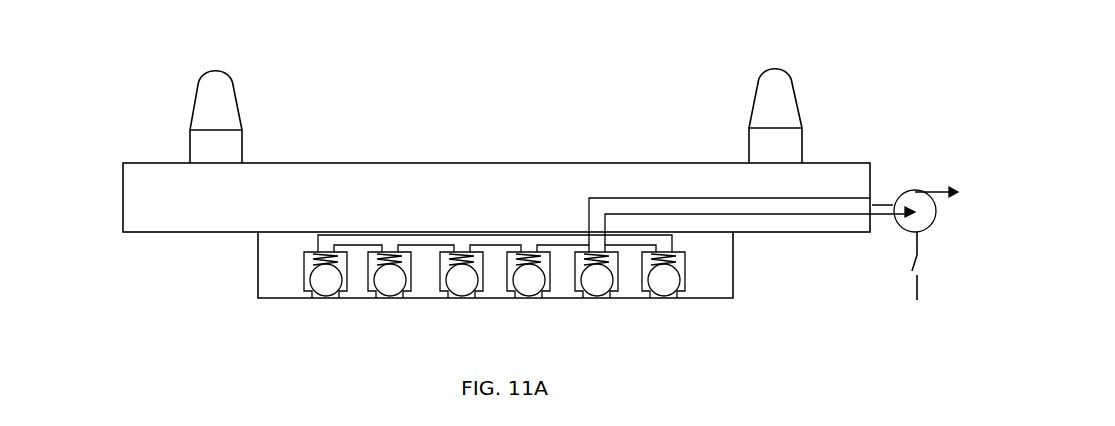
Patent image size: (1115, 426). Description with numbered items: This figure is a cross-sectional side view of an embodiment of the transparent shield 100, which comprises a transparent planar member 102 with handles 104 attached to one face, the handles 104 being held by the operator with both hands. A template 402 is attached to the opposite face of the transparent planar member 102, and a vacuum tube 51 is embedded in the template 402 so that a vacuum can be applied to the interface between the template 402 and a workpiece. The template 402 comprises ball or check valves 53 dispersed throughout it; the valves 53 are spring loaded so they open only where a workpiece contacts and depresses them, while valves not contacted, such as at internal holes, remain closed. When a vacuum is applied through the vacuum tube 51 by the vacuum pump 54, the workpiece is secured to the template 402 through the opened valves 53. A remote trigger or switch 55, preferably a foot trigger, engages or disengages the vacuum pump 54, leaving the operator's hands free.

The transparent shield 100 is at (568, 99).
The transparent planar member 102 is at (327, 172).
The handles 104 is at (775, 70).
The vacuum tube 51 is at (800, 205).
The ball or check valves 53 is at (598, 278).
The template 402 is at (723, 273).
The vacuum pump 54 is at (903, 222).
The remote trigger or switch 55 is at (915, 300).